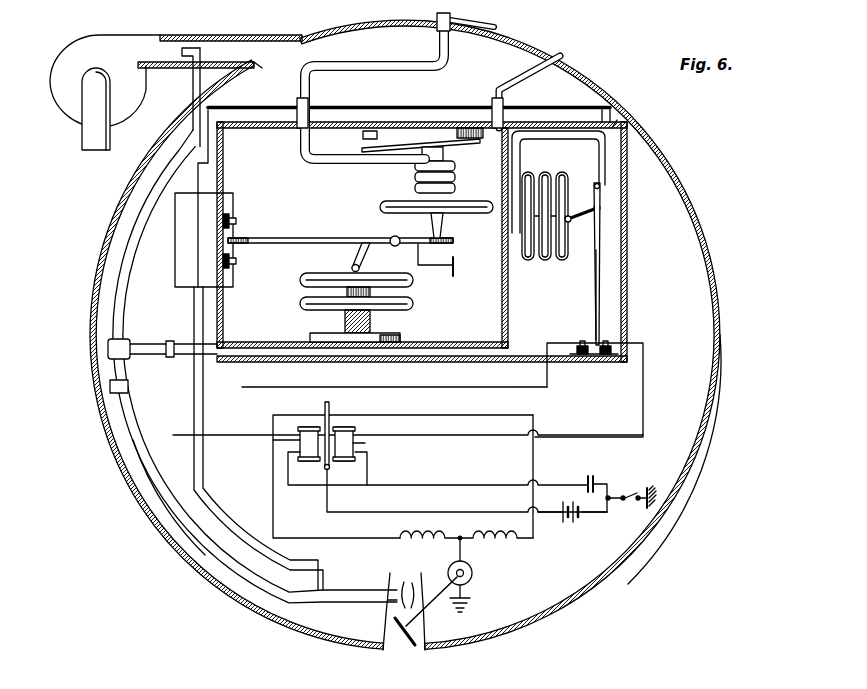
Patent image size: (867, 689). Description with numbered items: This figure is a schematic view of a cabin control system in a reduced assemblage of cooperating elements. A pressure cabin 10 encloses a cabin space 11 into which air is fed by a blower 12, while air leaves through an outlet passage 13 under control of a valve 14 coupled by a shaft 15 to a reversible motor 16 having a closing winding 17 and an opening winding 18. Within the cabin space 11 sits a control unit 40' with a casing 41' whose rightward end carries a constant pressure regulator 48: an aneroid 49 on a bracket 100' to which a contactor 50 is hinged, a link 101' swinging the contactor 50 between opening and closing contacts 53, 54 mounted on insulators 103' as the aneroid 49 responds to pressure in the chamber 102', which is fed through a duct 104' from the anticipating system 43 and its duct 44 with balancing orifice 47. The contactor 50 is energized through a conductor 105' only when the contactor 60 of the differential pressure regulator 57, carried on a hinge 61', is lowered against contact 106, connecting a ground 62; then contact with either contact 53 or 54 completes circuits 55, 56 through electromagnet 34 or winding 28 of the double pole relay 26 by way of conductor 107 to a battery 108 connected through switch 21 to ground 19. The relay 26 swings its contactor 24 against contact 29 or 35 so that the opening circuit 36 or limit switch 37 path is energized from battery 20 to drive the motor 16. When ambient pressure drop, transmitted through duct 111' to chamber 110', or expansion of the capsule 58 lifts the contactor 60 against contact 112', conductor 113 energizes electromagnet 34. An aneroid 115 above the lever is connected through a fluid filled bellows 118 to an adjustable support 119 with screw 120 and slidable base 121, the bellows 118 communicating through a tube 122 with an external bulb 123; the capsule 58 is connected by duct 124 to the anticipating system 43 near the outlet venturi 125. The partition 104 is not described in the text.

The pressure cabin 10 is at (720, 300).
The cabin space 11 is at (712, 398).
The blower 12 is at (112, 40).
The outlet passage 13 is at (386, 634).
The valve 14 is at (395, 649).
The shaft 15 is at (428, 616).
The reversible motor 16 is at (473, 575).
The closing winding 17 is at (506, 544).
The opening winding 18 is at (420, 544).
The ground 19 is at (648, 488).
The battery 20 is at (576, 522).
The switch 21 is at (624, 500).
The contactor 24 is at (330, 405).
The double pole relay 26 is at (290, 460).
The winding 28 is at (356, 444).
The contact 29 is at (311, 414).
The electromagnet 34 is at (272, 442).
The contact 35 is at (338, 414).
The opening circuit 36 is at (286, 486).
The limit switch 37 is at (535, 472).
The control unit 40' is at (633, 106).
The casing 41' is at (640, 242).
The anticipating system 43 is at (120, 258).
The duct 44 is at (140, 463).
The balancing orifice 47 is at (110, 387).
The constant pressure regulator 48 is at (573, 243).
The aneroid 49 is at (532, 264).
The contactor 50 is at (595, 290).
The opening contact 53 is at (584, 340).
The closing contact 54 is at (608, 340).
The circuit 55 is at (548, 386).
The circuit 56 is at (646, 396).
The differential pressure regulator 57 is at (414, 300).
The capsule 58 is at (300, 281).
The contactor 60 is at (300, 240).
The hinge 61' is at (376, 243).
The ground 62 is at (455, 265).
The bracket 100' is at (558, 182).
The link 101' is at (619, 210).
The chamber 102' is at (631, 295).
The insulators 103' is at (600, 372).
The partition wall 104 is at (422, 340).
The duct 104' is at (162, 335).
The conductor 105' is at (409, 100).
The contact 106 is at (238, 260).
The conductor 107 is at (478, 474).
The battery 108 is at (592, 478).
The chamber 110' is at (422, 235).
The duct 111' is at (525, 88).
The contact 112' is at (253, 216).
The conductor 113 is at (174, 270).
The aneroid 115 is at (470, 204).
The bellows 118 is at (414, 178).
The adjustable support 119 is at (380, 146).
The screw 120 is at (444, 150).
The base 121 is at (376, 130).
The tube 122 is at (408, 50).
The bulb 123 is at (500, 25).
The duct 124 is at (204, 392).
The outlet venturi 125 is at (392, 580).